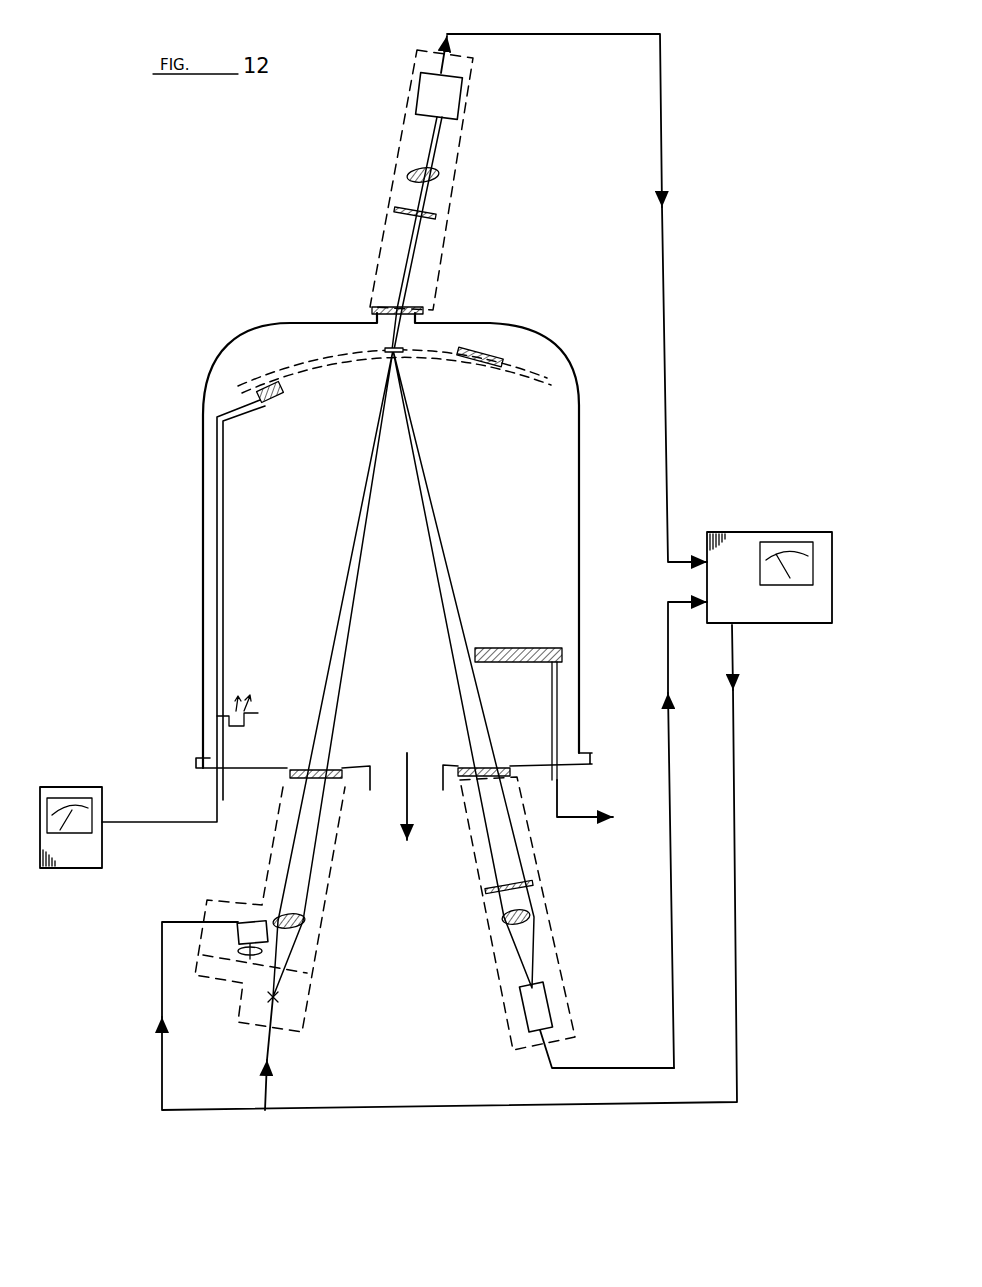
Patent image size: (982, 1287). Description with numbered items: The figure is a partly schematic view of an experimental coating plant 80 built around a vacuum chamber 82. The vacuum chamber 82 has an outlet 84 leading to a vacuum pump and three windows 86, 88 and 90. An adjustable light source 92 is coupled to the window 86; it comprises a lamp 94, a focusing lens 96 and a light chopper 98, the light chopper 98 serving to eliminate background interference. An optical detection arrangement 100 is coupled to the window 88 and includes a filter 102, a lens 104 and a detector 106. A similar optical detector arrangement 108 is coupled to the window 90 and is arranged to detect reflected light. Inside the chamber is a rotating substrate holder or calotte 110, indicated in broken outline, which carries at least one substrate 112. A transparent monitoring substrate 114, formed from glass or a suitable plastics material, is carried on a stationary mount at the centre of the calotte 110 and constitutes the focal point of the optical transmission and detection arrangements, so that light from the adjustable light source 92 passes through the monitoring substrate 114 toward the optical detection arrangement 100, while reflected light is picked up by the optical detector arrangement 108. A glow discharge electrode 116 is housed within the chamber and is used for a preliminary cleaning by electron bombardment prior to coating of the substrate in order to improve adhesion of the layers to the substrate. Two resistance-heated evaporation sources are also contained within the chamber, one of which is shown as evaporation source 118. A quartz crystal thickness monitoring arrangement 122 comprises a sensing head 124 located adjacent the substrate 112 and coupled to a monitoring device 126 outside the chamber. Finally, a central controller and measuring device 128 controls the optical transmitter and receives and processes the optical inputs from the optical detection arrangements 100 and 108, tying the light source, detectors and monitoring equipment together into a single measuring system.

The experimental coating plant 80 is at (436, 572).
The vacuum chamber 82 is at (580, 463).
The outlet 84 is at (384, 795).
The window 86 is at (308, 771).
The window 88 is at (420, 306).
The window 90 is at (500, 768).
The adjustable light source 92 is at (310, 988).
The lamp 94 is at (282, 1000).
The focusing lens 96 is at (305, 922).
The light chopper 98 is at (255, 920).
The optical detection arrangement 100 is at (448, 204).
The filter 102 is at (438, 219).
The lens 104 is at (441, 174).
The detector 106 is at (466, 103).
The optical detector arrangement 108 is at (556, 942).
The rotating substrate holder or calotte 110 is at (330, 350).
The substrate 112 is at (490, 352).
The transparent monitoring substrate 114 is at (404, 353).
The glow discharge electrode 116 is at (518, 648).
The resistance-heated evaporation source 118 is at (234, 686).
The quartz crystal thickness monitoring arrangement 122 is at (164, 806).
The sensing head 124 is at (262, 385).
The monitoring device 126 is at (72, 787).
The central controller and measuring device 128 is at (765, 532).